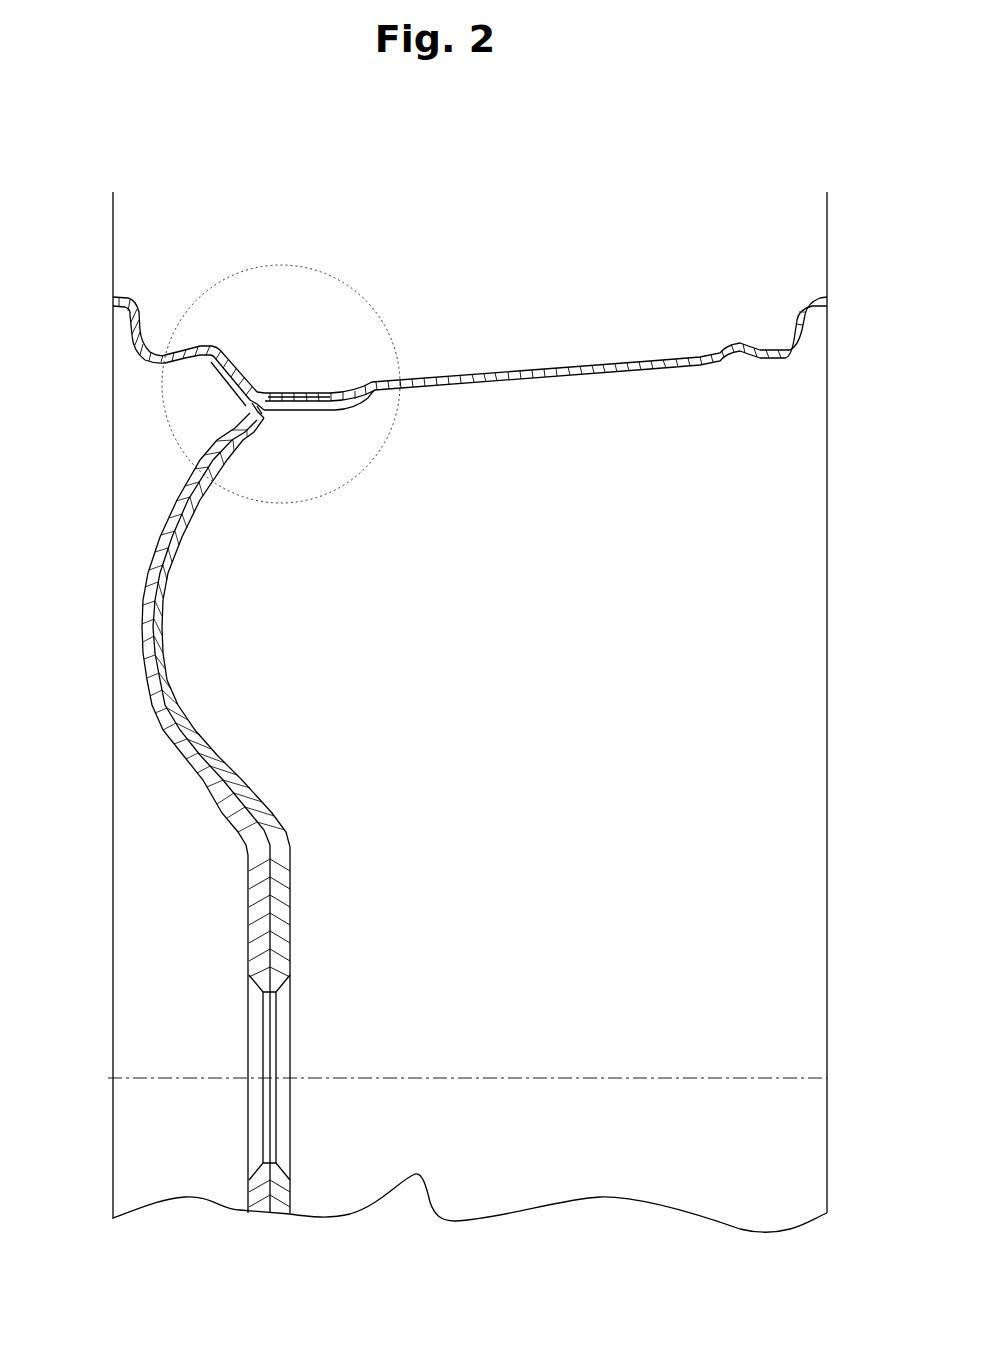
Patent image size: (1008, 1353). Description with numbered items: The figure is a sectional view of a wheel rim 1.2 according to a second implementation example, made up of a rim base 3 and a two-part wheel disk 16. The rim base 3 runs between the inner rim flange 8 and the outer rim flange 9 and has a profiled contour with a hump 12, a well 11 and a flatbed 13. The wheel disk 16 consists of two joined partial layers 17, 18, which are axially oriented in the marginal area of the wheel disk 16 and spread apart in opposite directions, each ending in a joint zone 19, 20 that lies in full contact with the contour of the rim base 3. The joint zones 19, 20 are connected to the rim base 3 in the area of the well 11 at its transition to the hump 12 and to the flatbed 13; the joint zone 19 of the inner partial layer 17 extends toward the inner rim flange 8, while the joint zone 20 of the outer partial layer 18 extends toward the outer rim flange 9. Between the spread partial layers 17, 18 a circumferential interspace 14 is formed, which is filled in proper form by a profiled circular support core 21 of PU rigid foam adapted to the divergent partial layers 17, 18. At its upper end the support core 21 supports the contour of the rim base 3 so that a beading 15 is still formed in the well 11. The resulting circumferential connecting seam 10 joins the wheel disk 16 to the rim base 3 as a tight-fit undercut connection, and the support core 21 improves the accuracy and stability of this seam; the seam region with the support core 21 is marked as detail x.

The wheel rim 1.2 is at (371, 1208).
The rim base 3 is at (546, 279).
The inner rim flange 8 is at (825, 685).
The outer rim flange 9 is at (113, 688).
The connecting seam 10 is at (281, 355).
The well 11 is at (313, 390).
The hump 12 is at (207, 345).
The flatbed 13 is at (646, 361).
The interspace 14 is at (352, 524).
The beading 15 is at (262, 397).
The wheel disk 16 is at (240, 786).
The inner partial layer 17 is at (278, 893).
The outer partial layer 18 is at (258, 928).
The joint zone 19 is at (335, 420).
The joint zone 20 is at (222, 370).
The support core 21 is at (262, 410).
The detail x is at (340, 277).